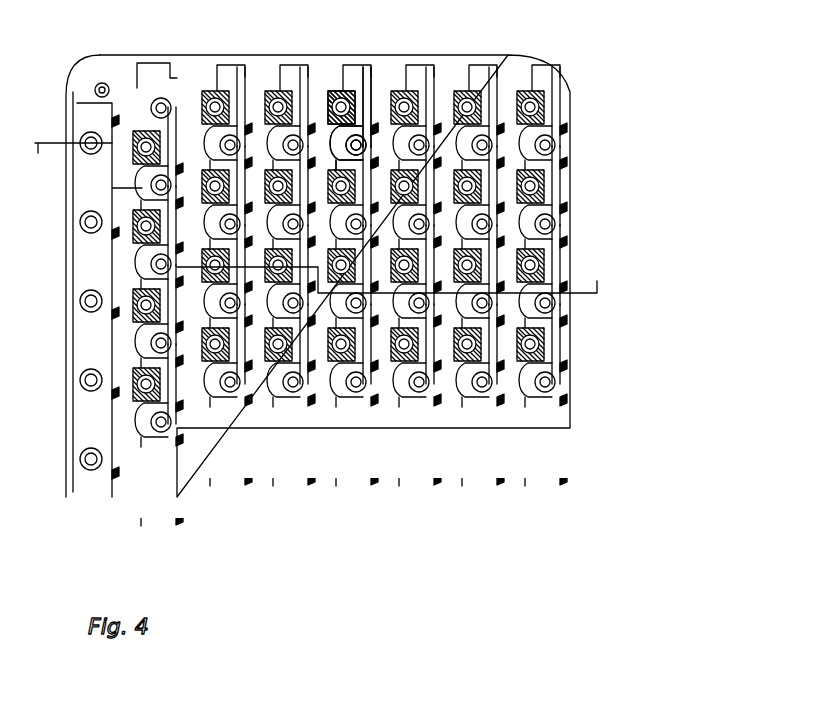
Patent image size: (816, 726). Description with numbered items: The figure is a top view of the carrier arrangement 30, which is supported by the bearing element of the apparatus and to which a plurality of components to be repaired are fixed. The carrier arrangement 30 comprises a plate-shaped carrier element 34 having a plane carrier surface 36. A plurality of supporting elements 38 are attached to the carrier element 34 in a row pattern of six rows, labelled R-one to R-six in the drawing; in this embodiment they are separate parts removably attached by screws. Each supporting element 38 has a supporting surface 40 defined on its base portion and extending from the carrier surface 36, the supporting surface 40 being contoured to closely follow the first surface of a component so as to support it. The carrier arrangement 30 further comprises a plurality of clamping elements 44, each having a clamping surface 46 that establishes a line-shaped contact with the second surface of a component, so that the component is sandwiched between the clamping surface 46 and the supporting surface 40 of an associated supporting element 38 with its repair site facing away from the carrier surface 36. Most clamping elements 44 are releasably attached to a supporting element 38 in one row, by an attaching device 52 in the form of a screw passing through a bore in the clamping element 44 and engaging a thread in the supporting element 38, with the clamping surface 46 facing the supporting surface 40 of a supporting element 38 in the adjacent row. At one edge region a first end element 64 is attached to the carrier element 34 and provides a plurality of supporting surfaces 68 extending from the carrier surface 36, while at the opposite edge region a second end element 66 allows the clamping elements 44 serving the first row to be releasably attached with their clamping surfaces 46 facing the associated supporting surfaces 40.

The carrier arrangement 30 is at (626, 145).
The carrier element 34 is at (570, 83).
The carrier surface 36 is at (524, 70).
The supporting element 38 is at (412, 68).
The supporting surface 40 is at (442, 97).
The clamping element 44 is at (283, 85).
The clamping surface 46 is at (258, 100).
The attaching device 52 is at (337, 95).
The first end element 64 is at (82, 115).
The second end element 66 is at (573, 195).
The supporting surface 68 is at (118, 130).